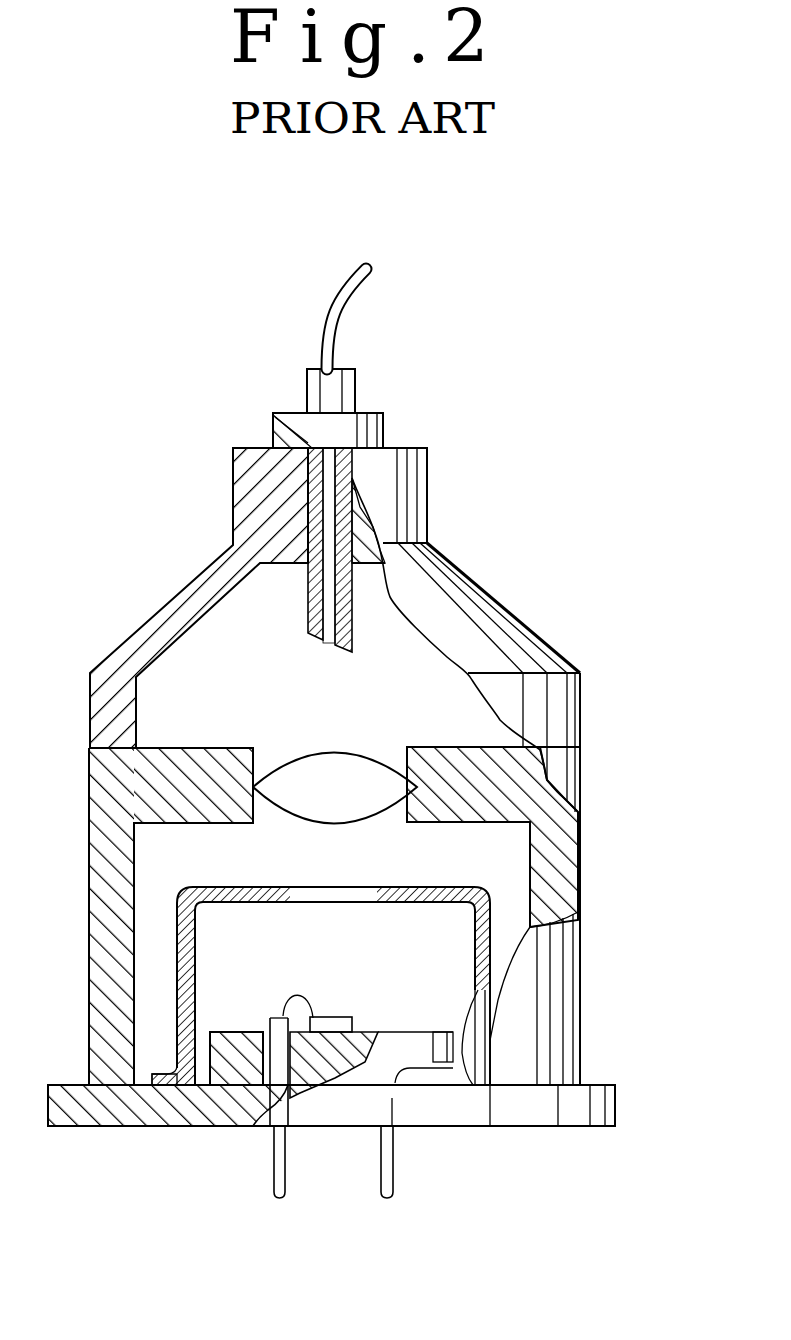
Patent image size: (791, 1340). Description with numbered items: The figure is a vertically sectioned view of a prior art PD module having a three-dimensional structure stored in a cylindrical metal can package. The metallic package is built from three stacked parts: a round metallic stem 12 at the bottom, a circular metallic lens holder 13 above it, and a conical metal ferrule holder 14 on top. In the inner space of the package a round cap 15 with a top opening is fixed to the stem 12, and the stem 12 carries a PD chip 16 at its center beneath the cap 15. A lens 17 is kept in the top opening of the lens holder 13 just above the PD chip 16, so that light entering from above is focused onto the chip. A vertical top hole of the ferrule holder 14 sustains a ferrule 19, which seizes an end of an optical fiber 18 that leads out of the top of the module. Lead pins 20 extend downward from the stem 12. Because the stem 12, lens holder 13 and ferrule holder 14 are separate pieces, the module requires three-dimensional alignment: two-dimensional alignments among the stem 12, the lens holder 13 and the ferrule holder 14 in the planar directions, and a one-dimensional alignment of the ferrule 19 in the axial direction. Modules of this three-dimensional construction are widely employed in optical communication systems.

The stem 12 is at (597, 1108).
The lens holder 13 is at (558, 1002).
The ferrule holder 14 is at (557, 700).
The cap 15 is at (493, 923).
The PD chip 16 is at (323, 1017).
The lens 17 is at (355, 787).
The optical fiber 18 is at (328, 637).
The ferrule 19 is at (313, 612).
The lead pins 20 is at (387, 1199).